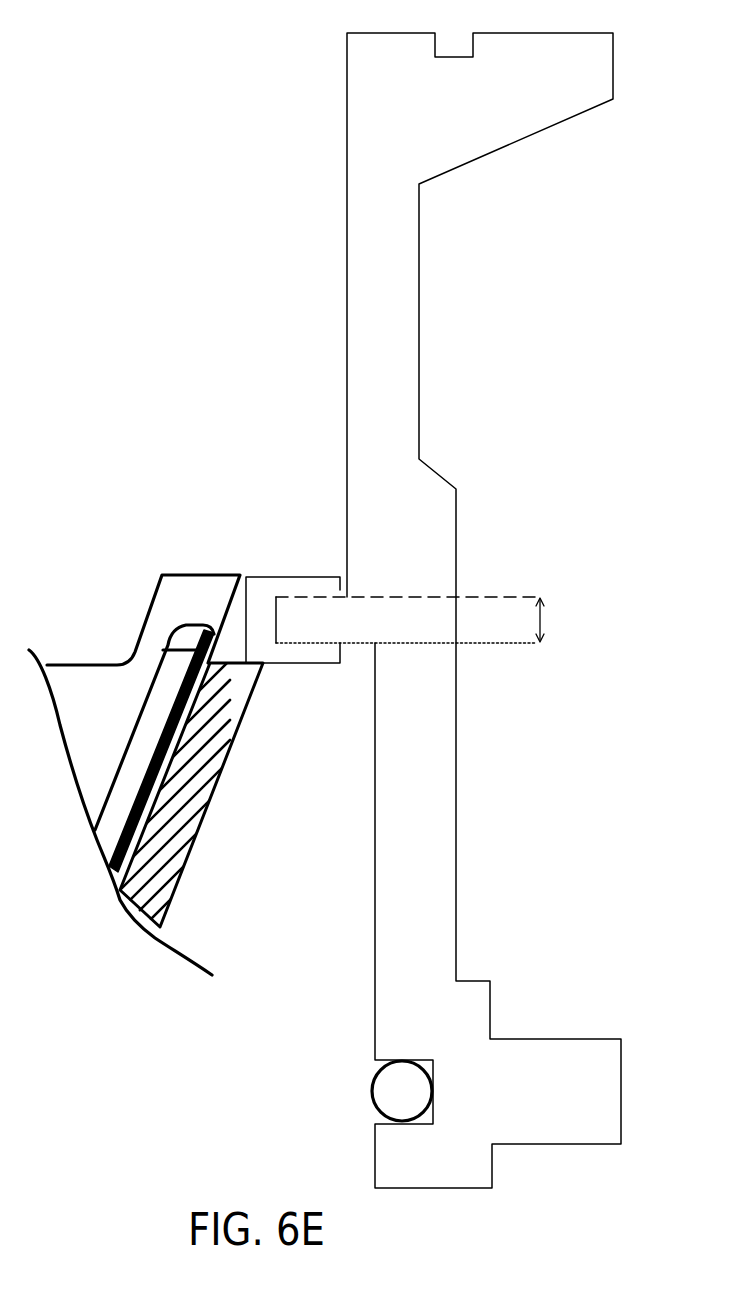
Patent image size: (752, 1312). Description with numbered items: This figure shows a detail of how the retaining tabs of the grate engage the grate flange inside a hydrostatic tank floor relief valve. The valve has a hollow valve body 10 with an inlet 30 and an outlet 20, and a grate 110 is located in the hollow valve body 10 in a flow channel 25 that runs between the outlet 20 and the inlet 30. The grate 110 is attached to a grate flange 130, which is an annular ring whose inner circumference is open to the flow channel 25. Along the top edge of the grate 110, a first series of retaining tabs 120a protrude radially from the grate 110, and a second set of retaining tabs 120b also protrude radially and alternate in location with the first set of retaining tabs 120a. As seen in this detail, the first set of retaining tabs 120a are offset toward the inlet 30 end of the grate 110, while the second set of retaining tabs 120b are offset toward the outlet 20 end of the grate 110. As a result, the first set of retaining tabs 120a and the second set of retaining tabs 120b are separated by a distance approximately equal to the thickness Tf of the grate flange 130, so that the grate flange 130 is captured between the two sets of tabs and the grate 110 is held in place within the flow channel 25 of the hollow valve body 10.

The hollow valve body 10 is at (419, 390).
The outlet 20 is at (288, 99).
The flow channel 25 is at (148, 479).
The inlet 30 is at (254, 1013).
The grate 110 is at (195, 850).
The first series of retaining tabs 120a is at (295, 663).
The second set of retaining tabs 120b is at (308, 577).
The grate flange 130 is at (332, 632).
The thickness of the grate flange Tf is at (539, 620).